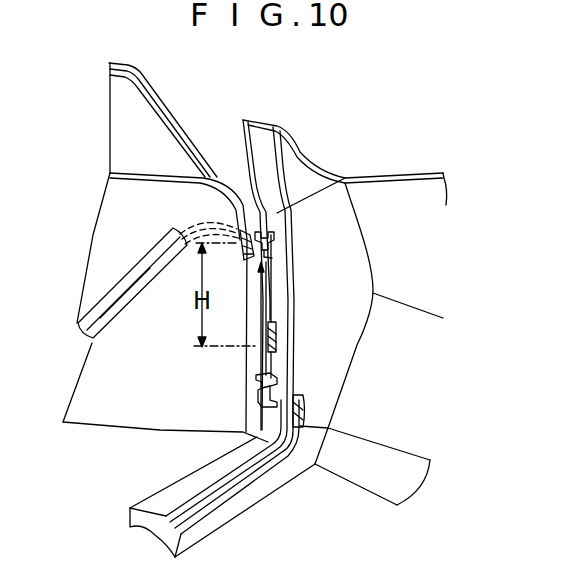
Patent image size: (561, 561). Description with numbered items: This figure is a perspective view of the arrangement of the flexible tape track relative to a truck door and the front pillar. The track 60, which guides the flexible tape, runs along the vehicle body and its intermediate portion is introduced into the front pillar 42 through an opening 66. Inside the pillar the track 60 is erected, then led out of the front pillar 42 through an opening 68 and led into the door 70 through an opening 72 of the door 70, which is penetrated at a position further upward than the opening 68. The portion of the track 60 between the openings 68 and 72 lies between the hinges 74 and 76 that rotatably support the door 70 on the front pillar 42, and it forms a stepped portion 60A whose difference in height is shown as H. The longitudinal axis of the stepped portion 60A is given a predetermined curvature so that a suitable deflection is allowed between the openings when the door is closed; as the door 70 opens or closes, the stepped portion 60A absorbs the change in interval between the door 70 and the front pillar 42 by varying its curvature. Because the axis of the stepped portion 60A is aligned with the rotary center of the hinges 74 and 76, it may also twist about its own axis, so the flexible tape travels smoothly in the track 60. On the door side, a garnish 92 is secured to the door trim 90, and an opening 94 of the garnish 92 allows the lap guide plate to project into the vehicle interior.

The front pillar 42 is at (343, 353).
The track 60 is at (262, 467).
The stepped portion 60A is at (270, 295).
The opening 66 is at (302, 400).
The opening 68 is at (260, 347).
The door 70 is at (116, 403).
The opening 72 is at (240, 251).
The hinge 74 is at (270, 247).
The hinge 76 is at (258, 390).
The door trim 90 is at (175, 415).
The garnish 92 is at (123, 288).
The opening 94 is at (123, 297).